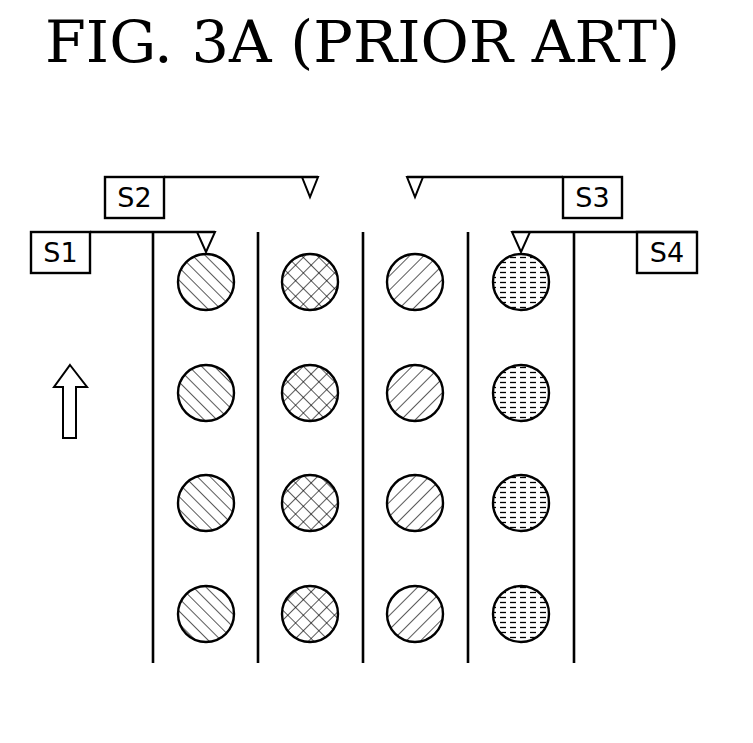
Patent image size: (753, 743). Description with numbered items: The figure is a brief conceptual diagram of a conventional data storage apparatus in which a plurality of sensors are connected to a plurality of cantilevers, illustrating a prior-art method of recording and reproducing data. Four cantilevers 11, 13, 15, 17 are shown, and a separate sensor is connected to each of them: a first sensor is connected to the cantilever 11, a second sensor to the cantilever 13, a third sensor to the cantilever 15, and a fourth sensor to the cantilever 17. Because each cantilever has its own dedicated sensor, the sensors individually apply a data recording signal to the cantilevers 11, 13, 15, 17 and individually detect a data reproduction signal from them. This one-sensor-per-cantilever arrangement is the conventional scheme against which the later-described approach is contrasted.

The cantilever 11 is at (186, 230).
The cantilever 13 is at (288, 175).
The cantilever 15 is at (437, 175).
The cantilever 17 is at (542, 230).